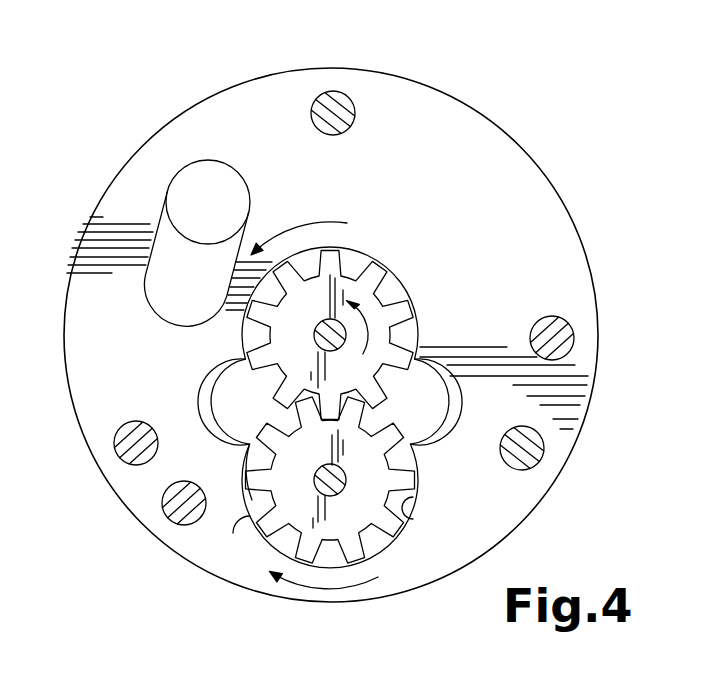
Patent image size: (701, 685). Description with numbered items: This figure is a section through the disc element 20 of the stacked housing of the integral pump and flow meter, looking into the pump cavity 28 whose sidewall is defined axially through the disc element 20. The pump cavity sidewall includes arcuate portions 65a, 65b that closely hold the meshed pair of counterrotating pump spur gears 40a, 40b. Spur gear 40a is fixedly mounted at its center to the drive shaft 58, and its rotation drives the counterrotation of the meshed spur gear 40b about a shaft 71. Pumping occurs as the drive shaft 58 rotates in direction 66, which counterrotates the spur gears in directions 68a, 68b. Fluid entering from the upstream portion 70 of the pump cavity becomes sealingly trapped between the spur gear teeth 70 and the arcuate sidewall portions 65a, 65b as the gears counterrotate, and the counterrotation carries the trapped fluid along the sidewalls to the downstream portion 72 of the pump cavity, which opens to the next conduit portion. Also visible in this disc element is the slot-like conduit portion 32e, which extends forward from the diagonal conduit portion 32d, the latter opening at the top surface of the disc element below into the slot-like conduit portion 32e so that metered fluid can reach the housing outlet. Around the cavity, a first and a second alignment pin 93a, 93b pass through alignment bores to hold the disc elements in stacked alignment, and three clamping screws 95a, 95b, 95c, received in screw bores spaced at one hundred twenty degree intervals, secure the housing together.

The disc element 20 is at (112, 500).
The pump cavity 28 is at (440, 424).
The diagonal conduit portion 32d is at (220, 188).
The slot-like conduit portion 32e is at (167, 269).
The spur gear 40a is at (395, 300).
The spur gear 40b is at (330, 560).
The drive shaft 58 is at (245, 345).
The arcuate portion 65a is at (378, 255).
The arcuate portion 65b is at (405, 522).
The direction 66 is at (392, 336).
The direction 68a is at (300, 227).
The direction 68b is at (305, 590).
The upstream portion 70 is at (427, 402).
The shaft 71 is at (243, 460).
The downstream portion 72 is at (227, 387).
The alignment pin 93a is at (163, 513).
The alignment pin 93b is at (574, 343).
The clamping screw 95a is at (115, 443).
The clamping screw 95b is at (333, 92).
The clamping screw 95c is at (543, 460).